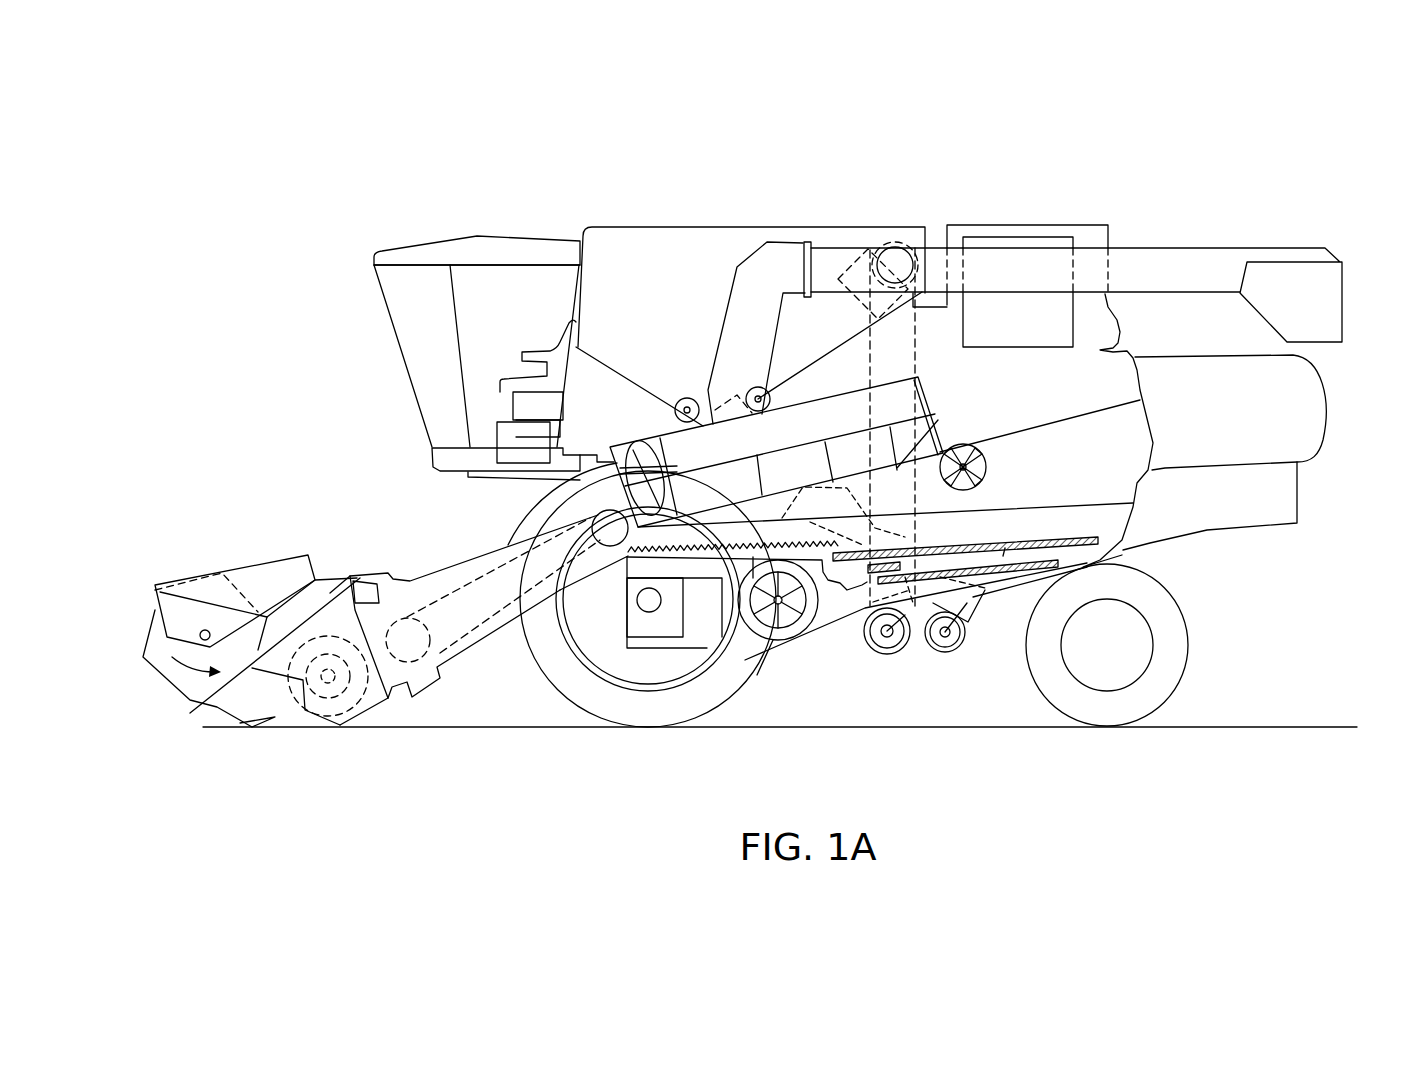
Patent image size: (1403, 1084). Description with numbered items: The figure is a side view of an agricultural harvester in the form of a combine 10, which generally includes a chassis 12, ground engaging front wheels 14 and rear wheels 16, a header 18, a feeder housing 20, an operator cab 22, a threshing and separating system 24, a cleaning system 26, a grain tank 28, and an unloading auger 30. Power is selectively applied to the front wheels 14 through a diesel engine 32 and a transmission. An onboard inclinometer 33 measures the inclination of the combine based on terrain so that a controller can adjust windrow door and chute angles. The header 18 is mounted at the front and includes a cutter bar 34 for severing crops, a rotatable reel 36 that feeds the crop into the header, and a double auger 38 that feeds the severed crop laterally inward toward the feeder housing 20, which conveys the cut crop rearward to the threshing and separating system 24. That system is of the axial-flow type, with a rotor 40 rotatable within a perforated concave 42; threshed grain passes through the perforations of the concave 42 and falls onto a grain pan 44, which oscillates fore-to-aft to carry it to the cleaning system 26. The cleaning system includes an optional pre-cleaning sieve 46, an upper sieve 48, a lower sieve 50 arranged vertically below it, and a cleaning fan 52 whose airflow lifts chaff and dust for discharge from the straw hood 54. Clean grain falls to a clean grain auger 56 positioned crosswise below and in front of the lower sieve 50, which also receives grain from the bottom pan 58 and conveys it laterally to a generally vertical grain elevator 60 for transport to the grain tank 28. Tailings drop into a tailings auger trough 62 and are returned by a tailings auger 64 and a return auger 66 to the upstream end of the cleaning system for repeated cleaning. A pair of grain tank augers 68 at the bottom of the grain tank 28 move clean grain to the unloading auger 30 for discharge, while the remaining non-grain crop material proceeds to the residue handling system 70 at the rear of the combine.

The combine 10 is at (456, 222).
The chassis 12 is at (1120, 555).
The front wheels 14 is at (565, 692).
The ground engaging wheels 16 is at (1180, 660).
The header 18 is at (236, 548).
The feeder housing 20 is at (442, 561).
The operator cab 22 is at (407, 333).
The threshing and separating system 24 is at (540, 494).
The cleaning system 26 is at (845, 650).
The grain tank 28 is at (628, 235).
The unloading auger 30 is at (1200, 262).
The diesel engine 32 is at (1003, 236).
The onboard inclinometer 33 is at (497, 427).
The cutter bar 34 is at (215, 732).
The rotatable reel 36 is at (146, 638).
The double auger 38 is at (323, 697).
The rotor 40 is at (635, 453).
The perforated concave 42 is at (800, 458).
The grain pan 44 is at (647, 558).
The pre-cleaning sieve 46 is at (907, 547).
The upper sieve 48 is at (1025, 540).
The lower sieve 50 is at (1005, 548).
The cleaning fan 52 is at (783, 640).
The straw hood 54 is at (1300, 398).
The clean grain auger 56 is at (882, 654).
The bottom pan 58 is at (1030, 588).
The grain elevator 60 is at (917, 347).
The tailings auger trough 62 is at (996, 598).
The tailings auger 64 is at (938, 654).
The return auger 66 is at (857, 522).
The grain tank augers 68 is at (681, 398).
The residue handling system 70 is at (1263, 545).